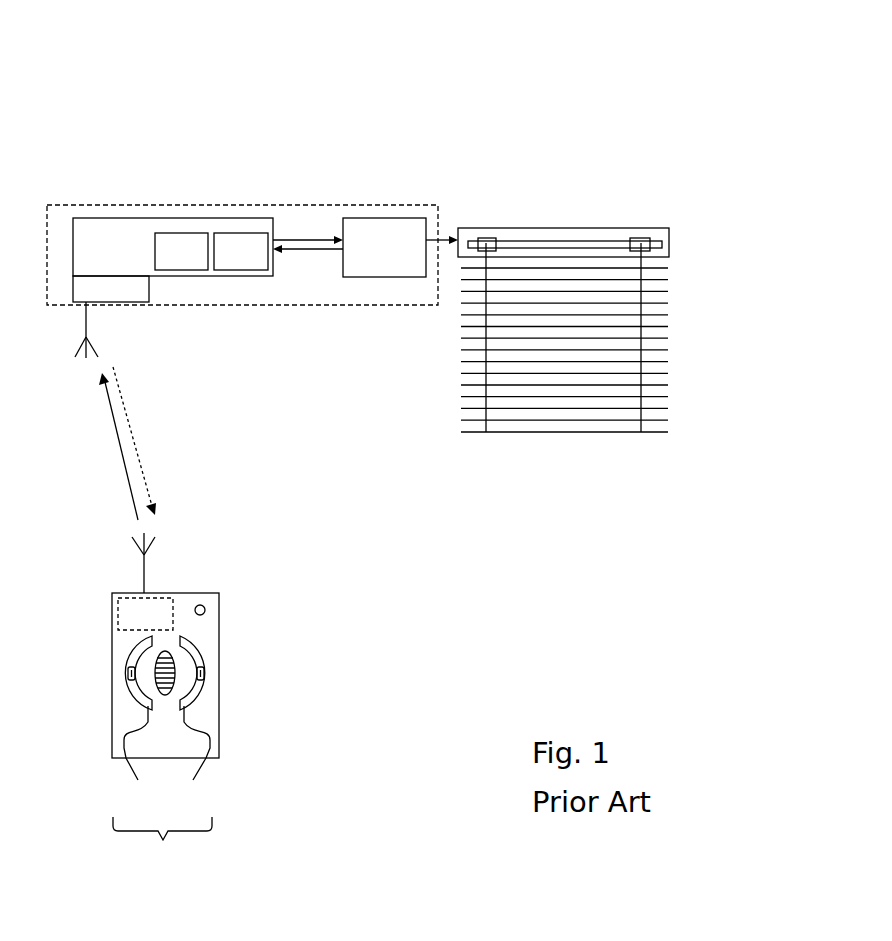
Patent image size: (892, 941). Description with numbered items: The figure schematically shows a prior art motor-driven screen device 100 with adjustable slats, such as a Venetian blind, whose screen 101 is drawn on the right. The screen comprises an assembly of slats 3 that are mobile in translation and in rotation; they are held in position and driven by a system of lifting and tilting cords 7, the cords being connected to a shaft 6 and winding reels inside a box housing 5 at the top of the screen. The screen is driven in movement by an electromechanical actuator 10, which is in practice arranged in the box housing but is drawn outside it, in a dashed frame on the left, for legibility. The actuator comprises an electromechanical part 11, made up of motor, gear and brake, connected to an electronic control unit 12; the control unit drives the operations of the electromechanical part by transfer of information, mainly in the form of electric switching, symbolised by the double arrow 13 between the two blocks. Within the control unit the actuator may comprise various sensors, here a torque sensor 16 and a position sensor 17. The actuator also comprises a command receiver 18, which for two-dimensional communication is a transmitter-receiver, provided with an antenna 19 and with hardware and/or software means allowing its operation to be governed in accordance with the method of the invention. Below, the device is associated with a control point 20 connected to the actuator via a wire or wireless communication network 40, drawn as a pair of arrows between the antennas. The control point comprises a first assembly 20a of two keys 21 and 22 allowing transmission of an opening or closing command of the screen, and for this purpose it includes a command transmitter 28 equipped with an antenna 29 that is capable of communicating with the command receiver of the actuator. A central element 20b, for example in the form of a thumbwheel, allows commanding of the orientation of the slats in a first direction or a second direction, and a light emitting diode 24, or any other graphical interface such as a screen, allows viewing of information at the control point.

The motor-driven screen device 100 is at (187, 112).
The window covering (blind) 101 is at (628, 102).
The electromechanical actuator 10 is at (141, 213).
The electromechanical part 11 is at (384, 247).
The electronic control unit 12 is at (173, 247).
The double arrow 13 is at (307, 240).
The torque sensor 16 is at (181, 251).
The position sensor 17 is at (241, 251).
The command receiver 18 is at (92, 293).
The antenna 19 is at (87, 325).
The box housing 5 is at (512, 237).
The tilt rod 6 is at (633, 237).
The slats 7 is at (645, 283).
The slats 3 is at (463, 420).
The communication network 40 is at (117, 443).
The control point 20 is at (232, 686).
The antenna 29 is at (142, 578).
The command transmitter 28 is at (160, 612).
The light emitting diode 24 is at (205, 612).
The central element 20b is at (160, 672).
The key 21 is at (135, 723).
The key 22 is at (195, 723).
The first assembly 20a is at (162, 843).